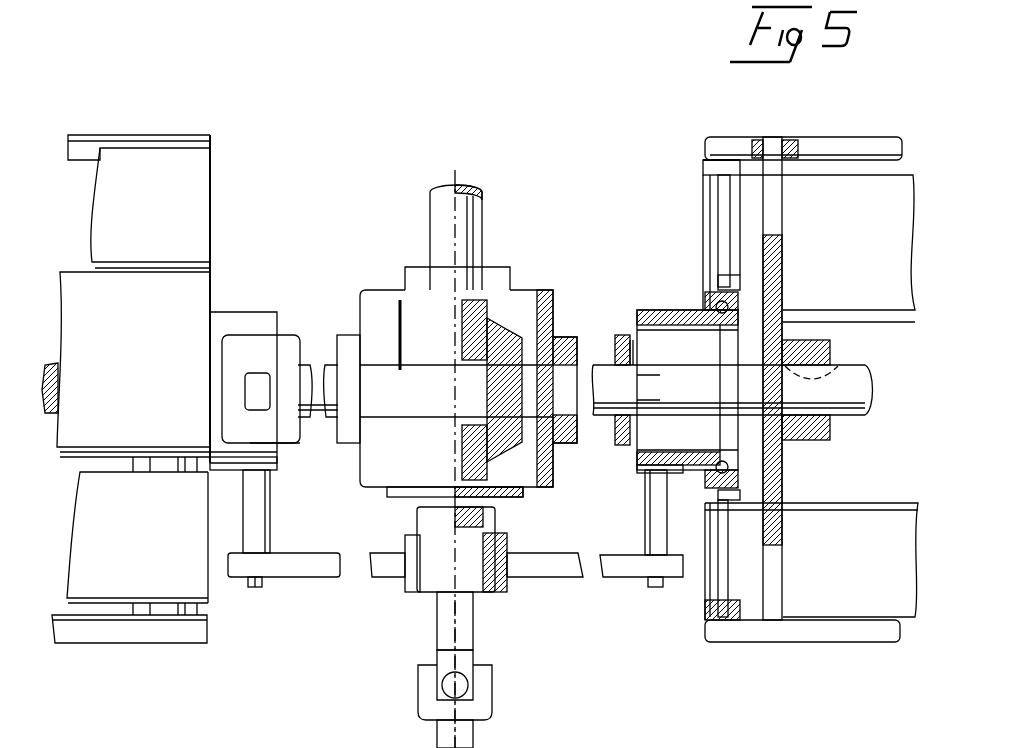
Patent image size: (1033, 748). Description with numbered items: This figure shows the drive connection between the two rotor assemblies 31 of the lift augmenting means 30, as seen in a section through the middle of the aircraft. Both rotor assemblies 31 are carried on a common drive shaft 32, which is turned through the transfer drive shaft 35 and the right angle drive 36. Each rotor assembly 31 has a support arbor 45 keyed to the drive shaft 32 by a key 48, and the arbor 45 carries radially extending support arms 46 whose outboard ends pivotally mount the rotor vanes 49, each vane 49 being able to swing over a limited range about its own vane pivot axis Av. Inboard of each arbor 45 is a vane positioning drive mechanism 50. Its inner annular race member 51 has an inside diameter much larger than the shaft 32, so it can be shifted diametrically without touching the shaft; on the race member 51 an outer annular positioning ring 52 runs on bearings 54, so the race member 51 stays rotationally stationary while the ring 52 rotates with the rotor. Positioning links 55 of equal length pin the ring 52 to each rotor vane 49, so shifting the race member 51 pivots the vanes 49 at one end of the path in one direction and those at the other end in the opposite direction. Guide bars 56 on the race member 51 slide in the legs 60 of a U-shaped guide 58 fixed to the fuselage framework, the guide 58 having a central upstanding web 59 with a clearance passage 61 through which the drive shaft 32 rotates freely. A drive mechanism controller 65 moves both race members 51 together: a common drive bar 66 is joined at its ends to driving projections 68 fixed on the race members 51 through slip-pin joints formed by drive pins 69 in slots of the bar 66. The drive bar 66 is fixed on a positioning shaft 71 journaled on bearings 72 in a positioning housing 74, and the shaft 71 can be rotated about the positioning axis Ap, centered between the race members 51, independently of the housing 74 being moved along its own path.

The lift augmenting means 30 is at (674, 122).
The rotor assembly 31 is at (212, 134).
The common drive shaft 32 is at (52, 368).
The transfer drive shaft 35 is at (478, 215).
The right angle drive 36 is at (555, 292).
The support arbor 45 is at (778, 266).
The support arm 46 is at (783, 226).
The key 48 is at (798, 372).
The rotor vane 49 is at (142, 170).
The vane positioning drive mechanism 50 is at (280, 486).
The inner annular race member 51 is at (246, 312).
The outer annular positioning ring 52 is at (708, 298).
The bearings 54 is at (721, 314).
The positioning link 55 is at (718, 198).
The guide bar 56 is at (262, 378).
The U-shaped guide 58 is at (290, 333).
The central upstanding web 59 is at (616, 440).
The legs 60 is at (290, 441).
The clearance passage 61 is at (616, 352).
The drive mechanism controller 65 is at (405, 597).
The common drive bar 66 is at (578, 572).
The driving projection 68 is at (264, 532).
The drive pin 69 is at (257, 588).
The positioning shaft 71 is at (440, 628).
The bearings 72 is at (490, 522).
The positioning housing 74 is at (508, 545).
The positioning axis Ap is at (458, 652).
The vane pivot axis Av is at (778, 148).